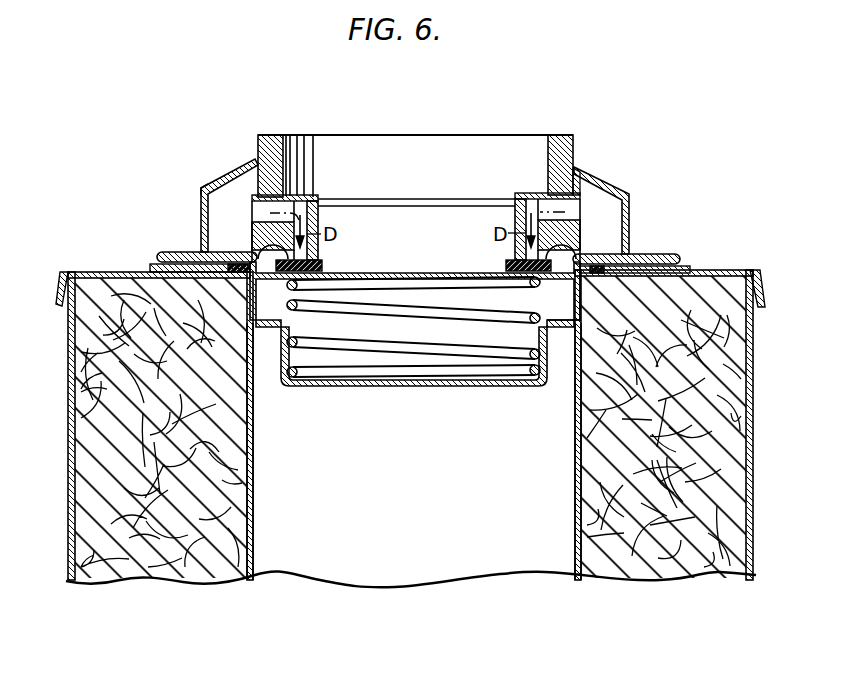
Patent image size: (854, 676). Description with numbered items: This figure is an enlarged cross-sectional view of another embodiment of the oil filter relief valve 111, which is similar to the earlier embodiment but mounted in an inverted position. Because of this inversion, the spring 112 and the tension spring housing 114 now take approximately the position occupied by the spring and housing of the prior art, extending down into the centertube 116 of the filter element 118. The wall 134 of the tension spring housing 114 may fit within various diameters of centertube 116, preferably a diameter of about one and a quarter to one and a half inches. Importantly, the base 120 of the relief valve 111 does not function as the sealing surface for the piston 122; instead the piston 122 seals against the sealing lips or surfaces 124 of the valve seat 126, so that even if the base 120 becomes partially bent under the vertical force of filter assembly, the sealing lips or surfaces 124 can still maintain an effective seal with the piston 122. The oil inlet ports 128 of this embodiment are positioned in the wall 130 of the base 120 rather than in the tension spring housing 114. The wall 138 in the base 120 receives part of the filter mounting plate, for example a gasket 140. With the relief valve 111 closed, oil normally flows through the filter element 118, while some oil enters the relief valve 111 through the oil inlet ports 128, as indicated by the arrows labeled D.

The relief valve 111 is at (658, 201).
The spring 112 is at (461, 350).
The tension spring housing 114 is at (277, 352).
The centertube 116 is at (538, 528).
The filter element 118 is at (690, 544).
The base 120 is at (222, 187).
The piston 122 is at (320, 264).
The sealing lips or surfaces 124 is at (258, 247).
The valve seat 126 is at (581, 226).
The oil inlet ports 128 is at (203, 227).
The wall of the base 130 is at (205, 193).
The wall of the tension spring housing 134 is at (568, 334).
The wall in the base 138 is at (578, 168).
The gasket 140 is at (565, 136).